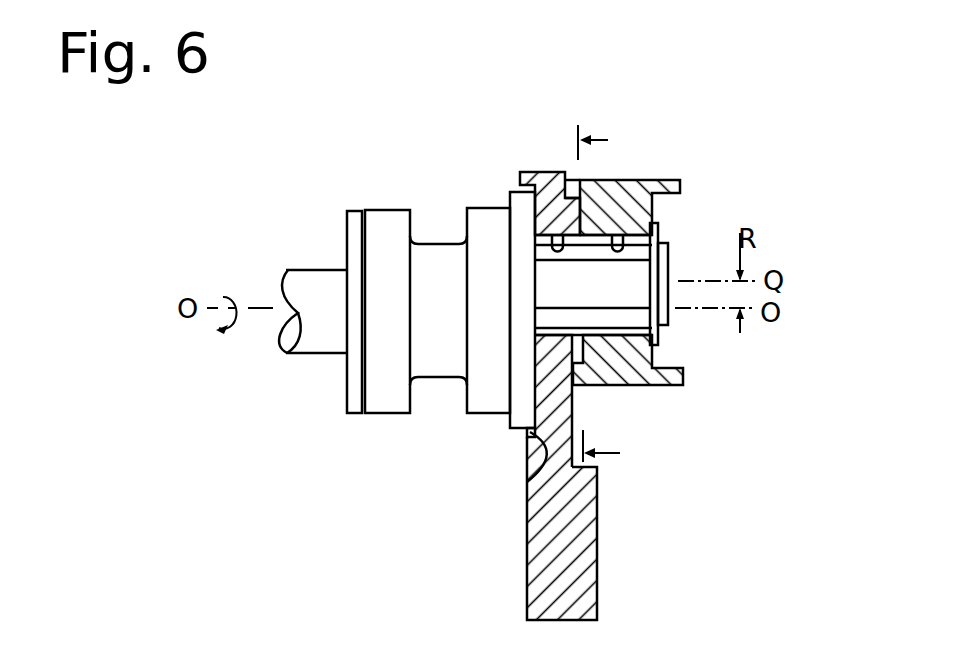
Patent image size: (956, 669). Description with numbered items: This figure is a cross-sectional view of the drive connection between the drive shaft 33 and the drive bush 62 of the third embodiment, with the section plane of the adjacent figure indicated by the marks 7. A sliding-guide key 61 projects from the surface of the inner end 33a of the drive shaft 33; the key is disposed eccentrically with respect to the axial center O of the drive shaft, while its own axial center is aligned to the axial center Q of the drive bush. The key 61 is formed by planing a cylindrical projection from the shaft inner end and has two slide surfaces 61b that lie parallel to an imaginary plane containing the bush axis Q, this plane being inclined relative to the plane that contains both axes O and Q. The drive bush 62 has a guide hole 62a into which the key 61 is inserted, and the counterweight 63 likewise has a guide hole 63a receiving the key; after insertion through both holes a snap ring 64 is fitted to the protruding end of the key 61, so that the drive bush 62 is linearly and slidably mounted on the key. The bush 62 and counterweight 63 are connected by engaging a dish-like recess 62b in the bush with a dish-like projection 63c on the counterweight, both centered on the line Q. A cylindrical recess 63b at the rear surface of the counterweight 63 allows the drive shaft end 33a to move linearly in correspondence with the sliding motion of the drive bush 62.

The drive shaft 33 is at (300, 280).
The inner end of the drive shaft 33a is at (521, 430).
The sliding-guide key 61 is at (617, 292).
The slide surfaces 61b is at (548, 293).
The drive bush 62 is at (640, 195).
The guide hole 62a is at (627, 222).
The recess 62b is at (580, 360).
The counterweight 63 is at (587, 565).
The guide hole 63a is at (567, 267).
The cylindrical recess 63b is at (530, 483).
The projection 63c is at (549, 401).
The snap ring 64 is at (657, 222).
The section line of FIG. 7 is at (611, 300).